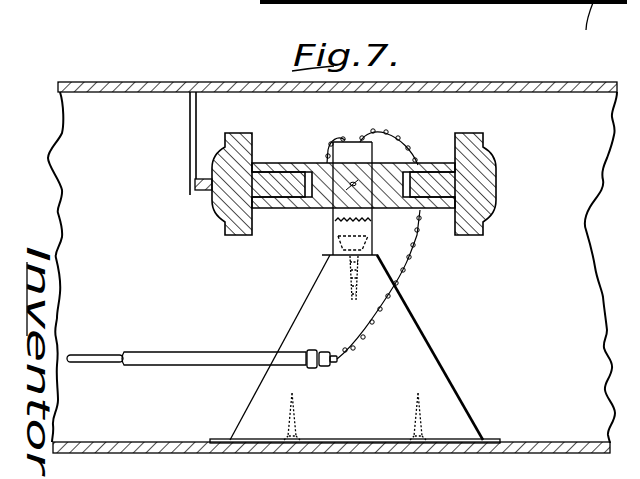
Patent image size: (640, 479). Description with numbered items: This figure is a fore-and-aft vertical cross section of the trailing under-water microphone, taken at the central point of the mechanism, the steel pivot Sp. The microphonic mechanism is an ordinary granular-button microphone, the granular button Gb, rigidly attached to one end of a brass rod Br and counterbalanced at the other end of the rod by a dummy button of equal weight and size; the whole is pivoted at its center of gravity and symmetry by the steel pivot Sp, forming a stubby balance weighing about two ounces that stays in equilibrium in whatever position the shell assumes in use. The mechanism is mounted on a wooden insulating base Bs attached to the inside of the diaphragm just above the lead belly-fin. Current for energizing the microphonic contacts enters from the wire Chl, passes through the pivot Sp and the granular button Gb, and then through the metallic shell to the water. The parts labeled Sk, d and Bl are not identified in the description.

The rail Sk is at (502, 80).
The hanger d is at (188, 143).
The granular button Gb is at (230, 225).
The brass rod Br is at (320, 175).
The steel pivot Sp is at (333, 208).
The wooden insulating base Bs is at (408, 358).
The wire Chl is at (92, 356).
The block Bl is at (577, 52).